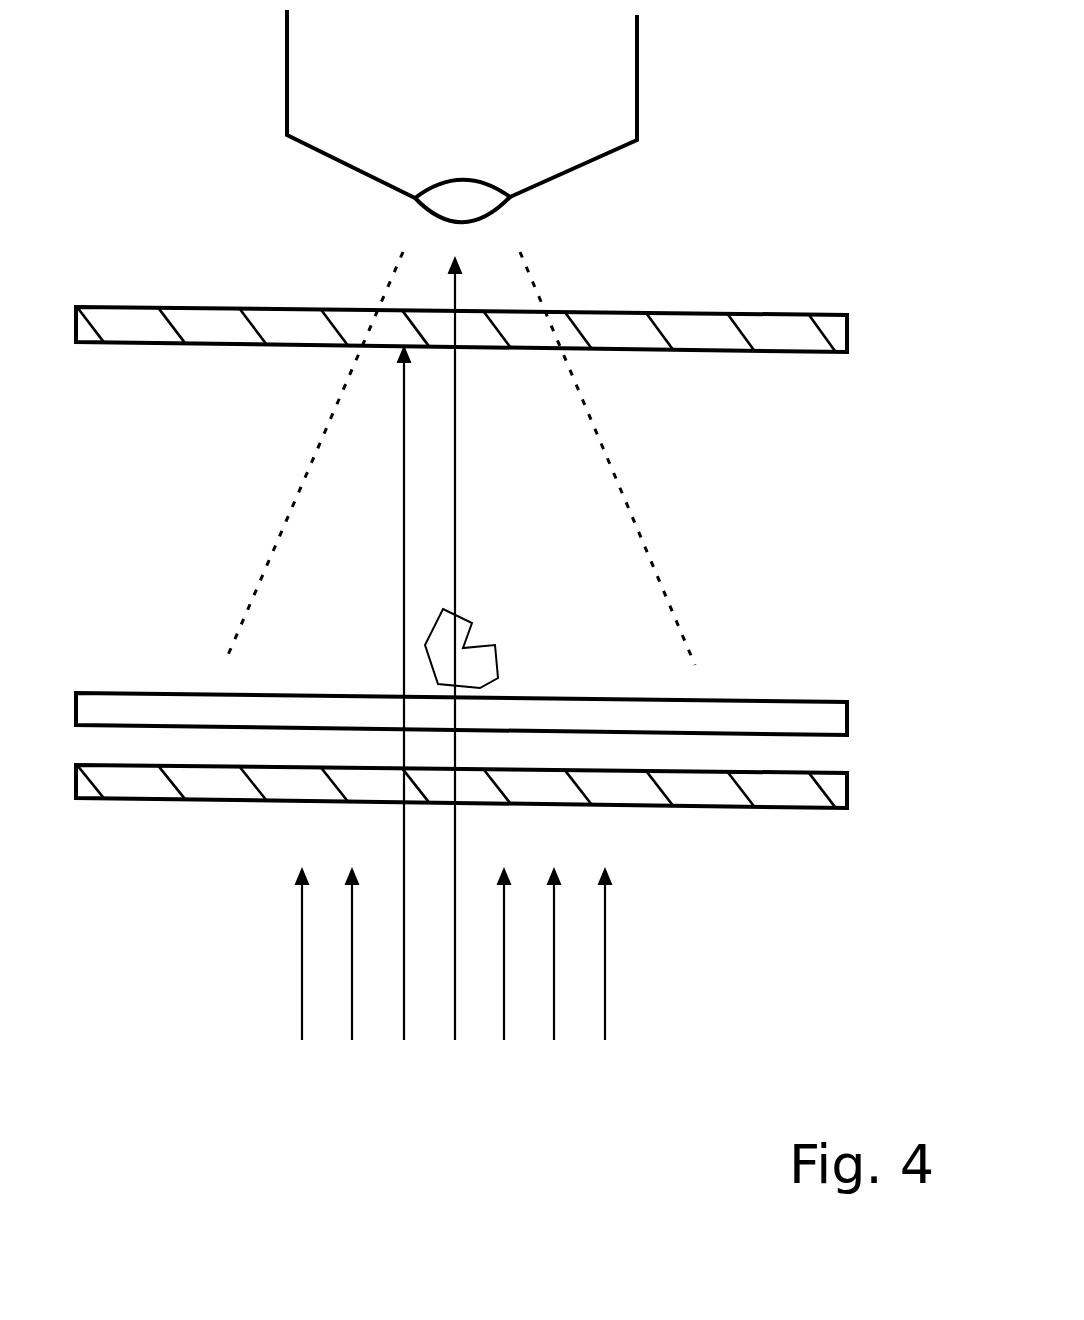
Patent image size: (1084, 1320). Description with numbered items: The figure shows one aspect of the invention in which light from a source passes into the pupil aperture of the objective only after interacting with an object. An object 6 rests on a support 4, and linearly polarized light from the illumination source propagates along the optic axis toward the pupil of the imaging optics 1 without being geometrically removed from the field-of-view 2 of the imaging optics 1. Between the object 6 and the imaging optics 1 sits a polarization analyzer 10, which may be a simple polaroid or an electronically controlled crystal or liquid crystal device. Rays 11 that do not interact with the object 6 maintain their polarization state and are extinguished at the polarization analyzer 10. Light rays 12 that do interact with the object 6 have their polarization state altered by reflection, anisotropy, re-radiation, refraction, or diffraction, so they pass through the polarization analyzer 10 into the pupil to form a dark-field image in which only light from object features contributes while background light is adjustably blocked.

The imaging optics 1 is at (622, 118).
The polarization analyzer 10 is at (702, 322).
The field-of-view 2 is at (632, 525).
The rays 11 is at (401, 346).
The light rays 12 is at (458, 346).
The object 6 is at (488, 673).
The support 4 is at (812, 715).